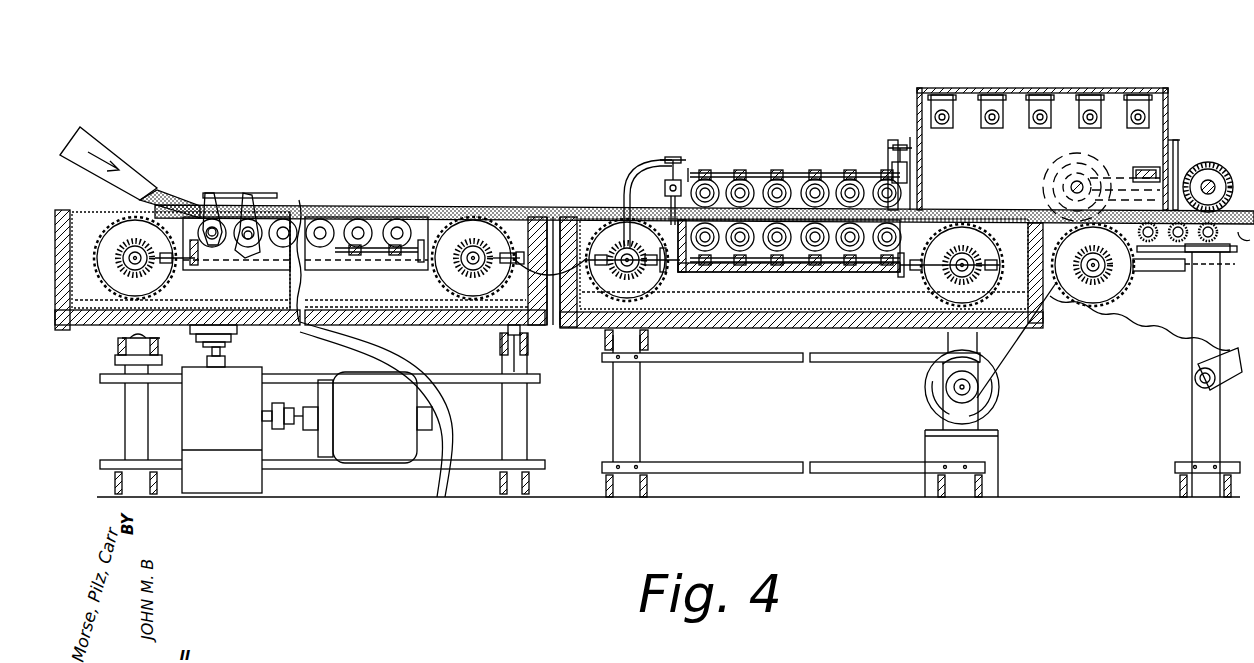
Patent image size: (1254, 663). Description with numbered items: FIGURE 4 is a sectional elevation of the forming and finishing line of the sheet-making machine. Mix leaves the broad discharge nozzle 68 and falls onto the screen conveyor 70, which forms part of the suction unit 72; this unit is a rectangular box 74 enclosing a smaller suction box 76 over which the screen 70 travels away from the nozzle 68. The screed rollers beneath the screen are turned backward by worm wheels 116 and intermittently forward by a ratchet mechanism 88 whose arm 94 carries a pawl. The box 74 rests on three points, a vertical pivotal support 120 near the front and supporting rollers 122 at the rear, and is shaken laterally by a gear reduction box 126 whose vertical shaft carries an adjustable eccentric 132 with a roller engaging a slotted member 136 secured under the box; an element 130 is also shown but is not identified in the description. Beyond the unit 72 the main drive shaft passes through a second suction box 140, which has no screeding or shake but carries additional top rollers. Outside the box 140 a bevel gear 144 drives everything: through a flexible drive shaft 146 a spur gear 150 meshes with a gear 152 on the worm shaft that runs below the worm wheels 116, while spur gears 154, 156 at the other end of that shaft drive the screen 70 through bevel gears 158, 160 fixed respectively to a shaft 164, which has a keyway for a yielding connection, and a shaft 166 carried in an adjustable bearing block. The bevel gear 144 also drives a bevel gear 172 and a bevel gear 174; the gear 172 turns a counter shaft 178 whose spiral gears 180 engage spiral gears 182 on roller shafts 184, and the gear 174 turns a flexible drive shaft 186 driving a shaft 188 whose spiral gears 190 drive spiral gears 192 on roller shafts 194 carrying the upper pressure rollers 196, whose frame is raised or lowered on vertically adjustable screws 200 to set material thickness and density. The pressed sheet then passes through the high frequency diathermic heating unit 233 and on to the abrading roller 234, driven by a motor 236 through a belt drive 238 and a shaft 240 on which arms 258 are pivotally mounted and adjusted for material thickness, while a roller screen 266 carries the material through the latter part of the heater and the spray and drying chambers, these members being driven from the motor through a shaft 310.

The discharge nozzle 68 is at (130, 163).
The screen conveyor 70 is at (376, 207).
The suction unit 72 is at (323, 189).
The rectangular box 74 is at (553, 220).
The suction box 76 is at (420, 217).
The ratchet mechanism 88 is at (241, 179).
The arm 94 is at (203, 192).
The worm wheel 116 is at (773, 240).
The vertical pivotal support 120 is at (523, 340).
The supporting roller 122 is at (122, 367).
The gear reduction box 126 is at (200, 409).
The gear box 130 is at (237, 330).
The adjustable eccentric 132 is at (232, 345).
The slotted member 136 is at (232, 308).
The second suction box 140 is at (567, 217).
The bevel gear 144 is at (627, 261).
The flexible drive shaft 146 is at (545, 320).
The spur gear 150 is at (733, 278).
The gear 152 is at (660, 191).
The spur gear 154 is at (915, 236).
The spur gear 156 is at (838, 263).
The bevel gear 158 is at (157, 263).
The bevel gear 160 is at (126, 247).
The shaft 164 is at (949, 280).
The shaft 166 is at (970, 241).
The bevel gear 172 is at (650, 283).
The bevel gear 174 is at (620, 240).
The counter shaft 178 is at (762, 332).
The spiral gears 180 is at (800, 250).
The spiral gears 182 is at (868, 176).
The roller shafts 184 is at (835, 176).
The flexible drive shaft 186 is at (626, 186).
The shaft 188 is at (758, 176).
The spiral gears 190 is at (808, 174).
The spiral gears 192 is at (723, 176).
The roller shafts 194 is at (885, 160).
The upper pressure rollers 196 is at (787, 178).
The vertically adjustable screws 200 is at (680, 158).
The high frequency diathermic heating unit 233 is at (1060, 88).
The abrading roller 234 is at (1215, 158).
The motor 236 is at (1000, 395).
The belt drive 238 is at (1045, 297).
The shaft 240 is at (1074, 185).
The arm 258 is at (1183, 163).
The roller screen 266 is at (1138, 340).
The shaft 310 is at (1137, 266).